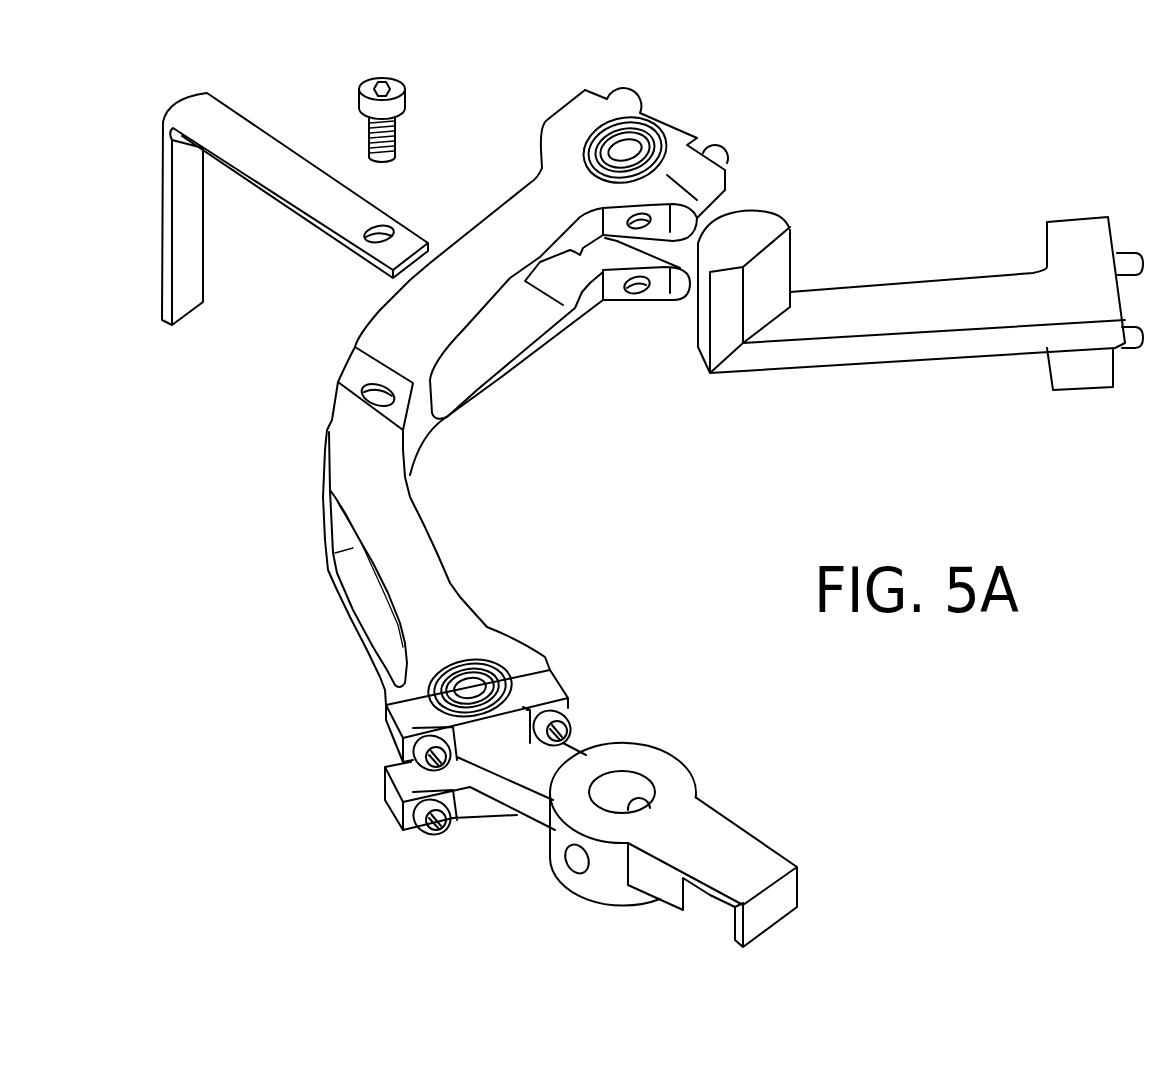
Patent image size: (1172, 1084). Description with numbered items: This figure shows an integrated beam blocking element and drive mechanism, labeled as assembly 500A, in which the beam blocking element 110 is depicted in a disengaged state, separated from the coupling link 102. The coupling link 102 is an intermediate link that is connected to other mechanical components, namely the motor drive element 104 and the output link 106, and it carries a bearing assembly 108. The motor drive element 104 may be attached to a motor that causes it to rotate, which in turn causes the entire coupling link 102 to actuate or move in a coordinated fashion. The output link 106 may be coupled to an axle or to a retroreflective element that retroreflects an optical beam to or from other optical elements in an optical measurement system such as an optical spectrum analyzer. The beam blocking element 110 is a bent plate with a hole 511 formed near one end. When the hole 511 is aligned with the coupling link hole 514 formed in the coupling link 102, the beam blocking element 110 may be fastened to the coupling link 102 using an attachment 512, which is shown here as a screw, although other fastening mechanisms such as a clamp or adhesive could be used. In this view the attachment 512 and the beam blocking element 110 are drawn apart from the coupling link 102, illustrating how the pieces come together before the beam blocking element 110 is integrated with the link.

The assembly 500A is at (912, 113).
The coupling link 102 is at (535, 178).
The motor drive element 104 is at (733, 823).
The output link 106 is at (1098, 215).
The bearing assembly 108 is at (563, 682).
The beam blocking element 110 is at (202, 108).
The hole 511 is at (386, 231).
The attachment 512 is at (368, 83).
The coupling link hole 514 is at (368, 388).